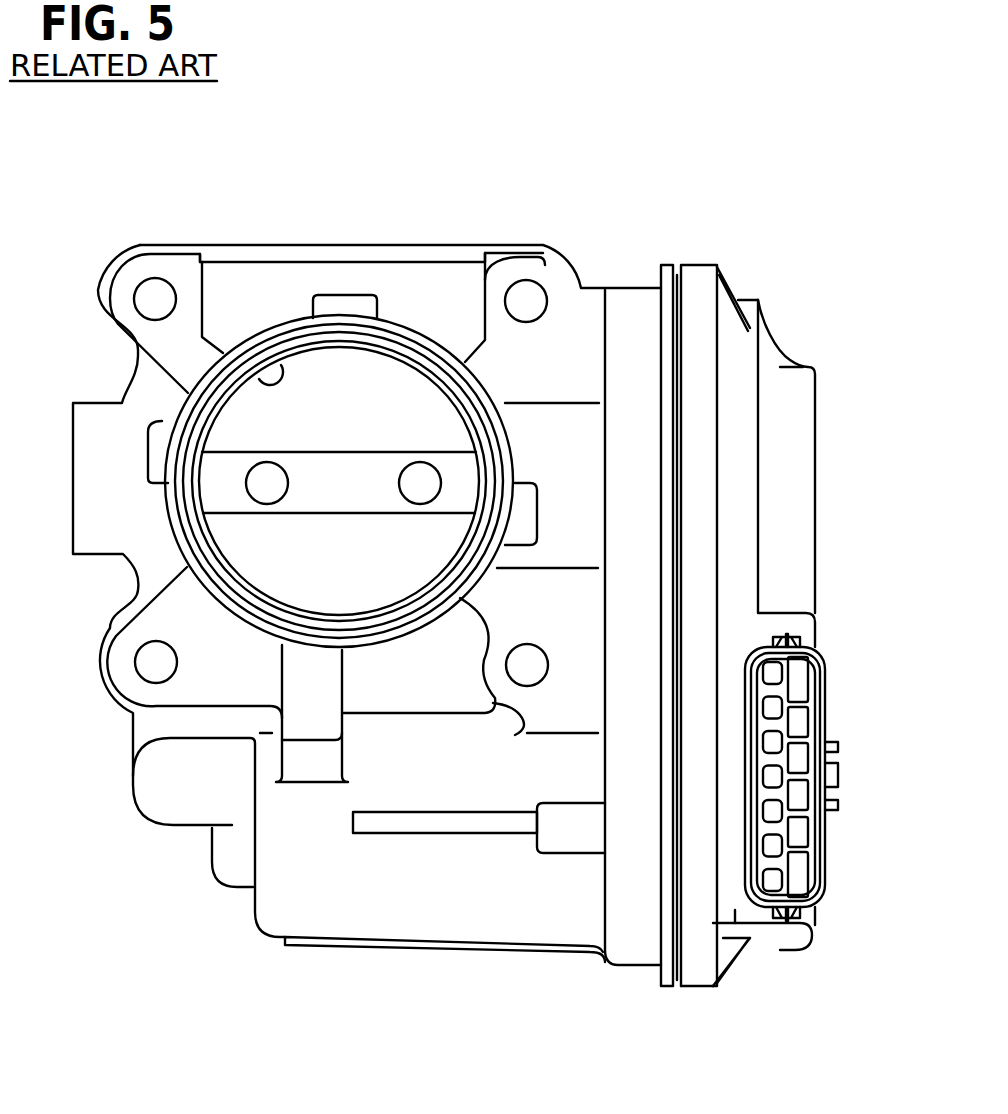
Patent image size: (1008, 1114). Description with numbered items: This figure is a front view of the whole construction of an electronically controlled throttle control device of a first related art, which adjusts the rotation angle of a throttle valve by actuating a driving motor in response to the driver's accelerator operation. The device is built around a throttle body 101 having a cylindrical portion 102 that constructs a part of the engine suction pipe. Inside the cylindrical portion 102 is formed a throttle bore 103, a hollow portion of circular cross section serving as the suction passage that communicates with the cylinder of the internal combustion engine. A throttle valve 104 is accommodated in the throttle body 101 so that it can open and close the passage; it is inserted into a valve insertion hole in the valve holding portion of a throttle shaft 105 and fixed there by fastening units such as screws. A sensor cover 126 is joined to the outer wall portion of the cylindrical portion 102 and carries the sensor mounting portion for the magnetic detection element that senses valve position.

The throttle body 101 is at (120, 237).
The cylindrical portion 102 is at (397, 314).
The throttle bore 103 is at (283, 357).
The throttle valve 104 is at (410, 390).
The throttle shaft 105 is at (320, 500).
The sensor cover 126 is at (817, 488).